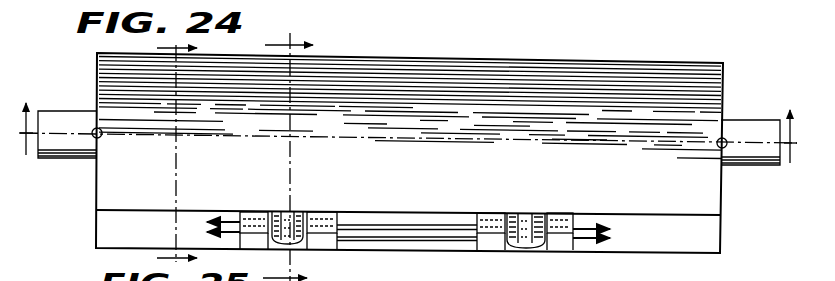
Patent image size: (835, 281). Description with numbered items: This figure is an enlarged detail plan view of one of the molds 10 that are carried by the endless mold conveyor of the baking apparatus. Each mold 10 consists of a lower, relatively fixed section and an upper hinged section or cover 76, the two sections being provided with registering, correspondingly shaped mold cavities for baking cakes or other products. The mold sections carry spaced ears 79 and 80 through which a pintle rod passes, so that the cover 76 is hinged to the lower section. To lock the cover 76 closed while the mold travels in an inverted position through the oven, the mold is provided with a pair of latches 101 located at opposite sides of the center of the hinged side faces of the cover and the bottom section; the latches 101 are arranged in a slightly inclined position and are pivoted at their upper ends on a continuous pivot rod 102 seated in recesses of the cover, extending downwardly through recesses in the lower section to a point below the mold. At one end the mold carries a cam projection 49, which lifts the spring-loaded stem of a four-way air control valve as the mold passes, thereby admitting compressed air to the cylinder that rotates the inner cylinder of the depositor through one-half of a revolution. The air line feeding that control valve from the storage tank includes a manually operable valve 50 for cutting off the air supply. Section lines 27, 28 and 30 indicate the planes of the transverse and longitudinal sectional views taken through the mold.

The mold 10 is at (562, 40).
The section line 27 is at (409, 118).
The section line 28 is at (157, 152).
The section line 30 is at (301, 146).
The cam projection 49 is at (67, 150).
The manually operable valve 50 is at (752, 166).
The upper hinged section or cover 76 is at (412, 72).
The spaced ears 79 is at (258, 214).
The spaced ears 80 is at (298, 213).
The latch 101 is at (290, 245).
The continuous pivot rod 102 is at (407, 224).